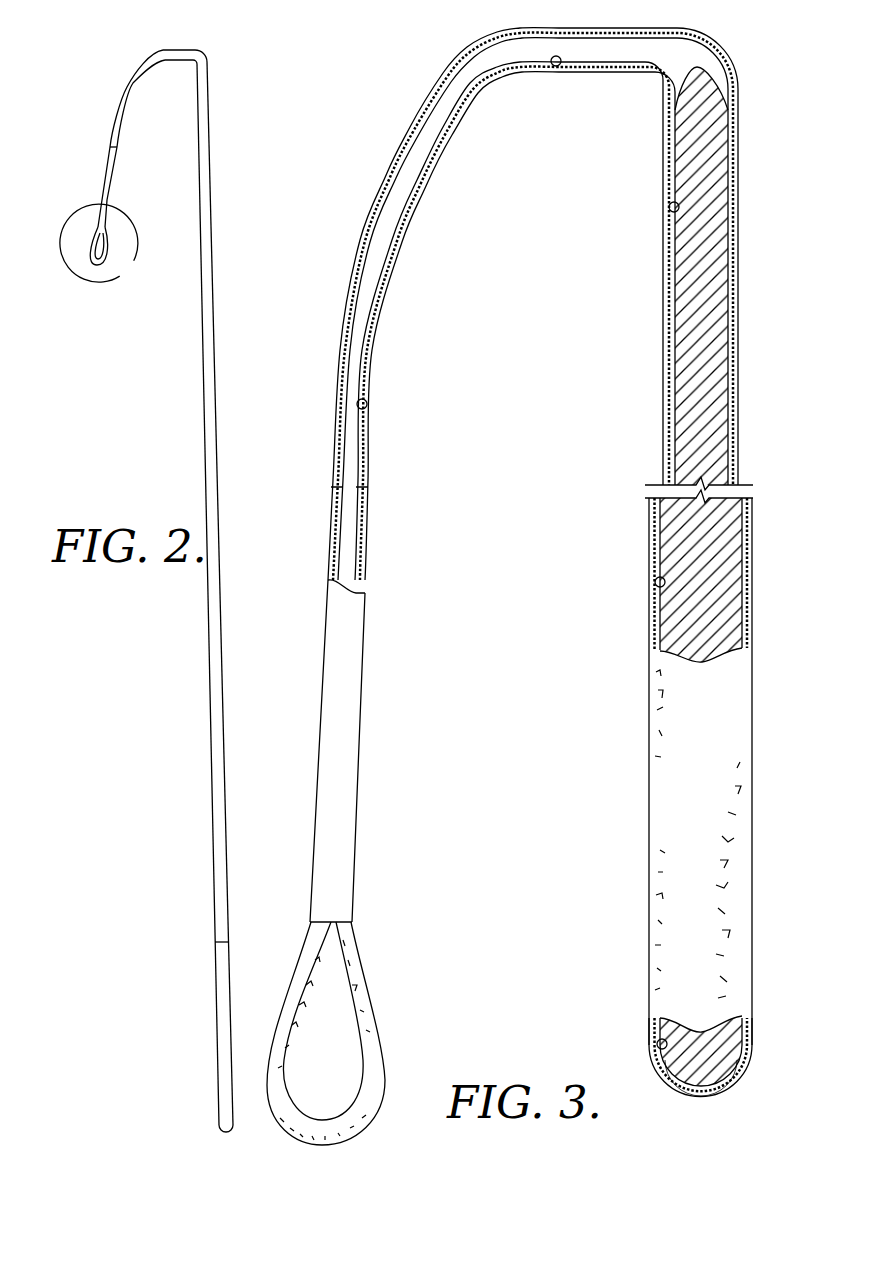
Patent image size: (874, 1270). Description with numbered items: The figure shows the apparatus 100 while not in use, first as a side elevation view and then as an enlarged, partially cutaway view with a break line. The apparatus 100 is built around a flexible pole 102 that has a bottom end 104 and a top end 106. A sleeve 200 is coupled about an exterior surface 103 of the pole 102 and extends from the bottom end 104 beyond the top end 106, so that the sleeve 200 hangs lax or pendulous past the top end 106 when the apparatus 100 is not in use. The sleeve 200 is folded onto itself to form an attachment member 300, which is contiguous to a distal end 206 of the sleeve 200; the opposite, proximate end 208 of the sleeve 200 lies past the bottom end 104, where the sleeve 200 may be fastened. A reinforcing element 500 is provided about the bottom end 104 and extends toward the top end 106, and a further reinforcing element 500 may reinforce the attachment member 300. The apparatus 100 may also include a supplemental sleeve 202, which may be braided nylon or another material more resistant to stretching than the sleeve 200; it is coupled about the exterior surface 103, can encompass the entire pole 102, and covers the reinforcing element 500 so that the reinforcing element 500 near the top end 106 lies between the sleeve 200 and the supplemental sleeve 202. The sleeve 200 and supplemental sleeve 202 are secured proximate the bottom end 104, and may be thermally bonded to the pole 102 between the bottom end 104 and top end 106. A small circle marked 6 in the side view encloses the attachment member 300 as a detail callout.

In FIG. 2, the apparatus 100 is at (93, 64).
In FIG. 3, the apparatus 100 is at (382, 78).
In FIG. 2, the pole 102 is at (215, 578).
In FIG. 3, the pole 102 is at (703, 298).
In FIG. 3, the exterior surface 103 is at (722, 90).
In FIG. 2, the bottom end 104 is at (227, 1133).
In FIG. 3, the bottom end 104 is at (702, 1097).
In FIG. 2, the top end 106 is at (203, 55).
In FIG. 2, the sleeve 200 is at (160, 53).
In FIG. 3, the sleeve 200 is at (556, 66).
In FIG. 3, the supplemental sleeve 202 is at (555, 28).
In FIG. 3, the distal end 206 is at (330, 482).
In FIG. 3, the proximate end 208 is at (698, 1092).
In FIG. 2, the attachment member 300 is at (87, 253).
In FIG. 3, the attachment member 300 is at (358, 968).
In FIG. 2, the reinforcing element 500 is at (110, 170).
In FIG. 3, the reinforcing element 500 is at (603, 27).
In FIG. 2, the detail view circle 6 is at (122, 275).